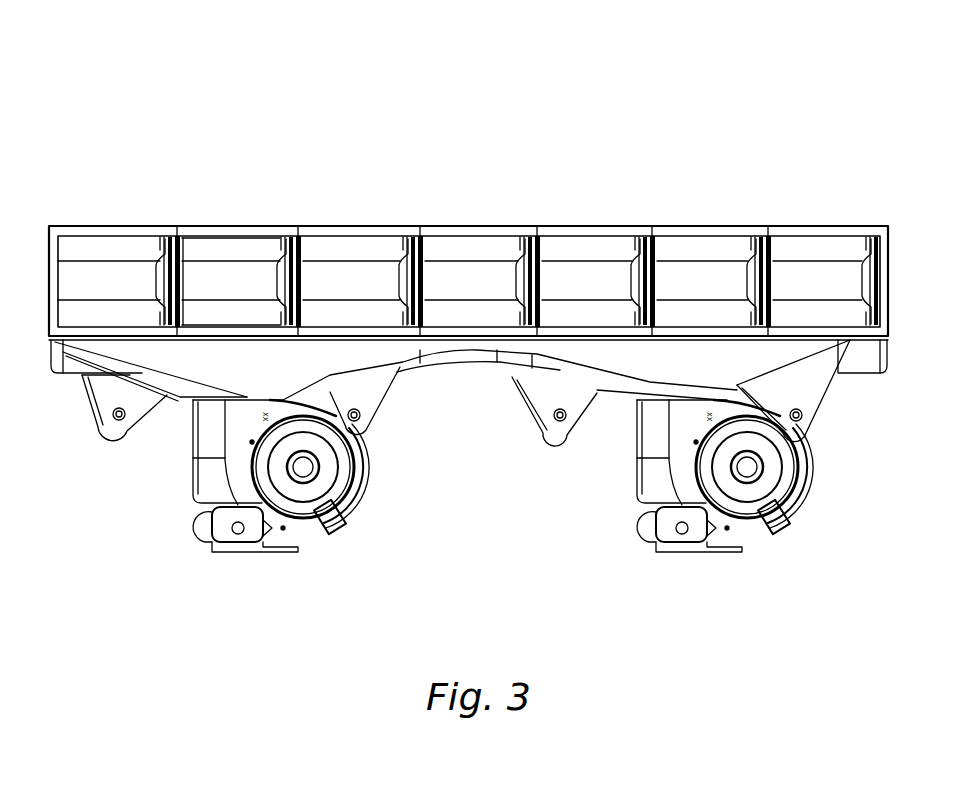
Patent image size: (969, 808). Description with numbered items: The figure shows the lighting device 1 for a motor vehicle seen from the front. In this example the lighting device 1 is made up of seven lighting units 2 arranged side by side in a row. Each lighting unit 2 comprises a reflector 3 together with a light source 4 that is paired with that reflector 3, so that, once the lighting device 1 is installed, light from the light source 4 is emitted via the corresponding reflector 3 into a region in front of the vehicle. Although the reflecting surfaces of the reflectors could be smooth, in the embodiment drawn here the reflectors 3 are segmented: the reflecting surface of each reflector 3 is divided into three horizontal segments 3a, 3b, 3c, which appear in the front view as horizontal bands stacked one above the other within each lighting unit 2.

The lighting device 1 is at (543, 112).
The lighting unit 2 is at (95, 219).
The reflector 3 is at (113, 246).
The horizontal segment 3a is at (205, 248).
The horizontal segment 3b is at (238, 272).
The horizontal segment 3c is at (213, 313).
The light source 4 is at (148, 282).